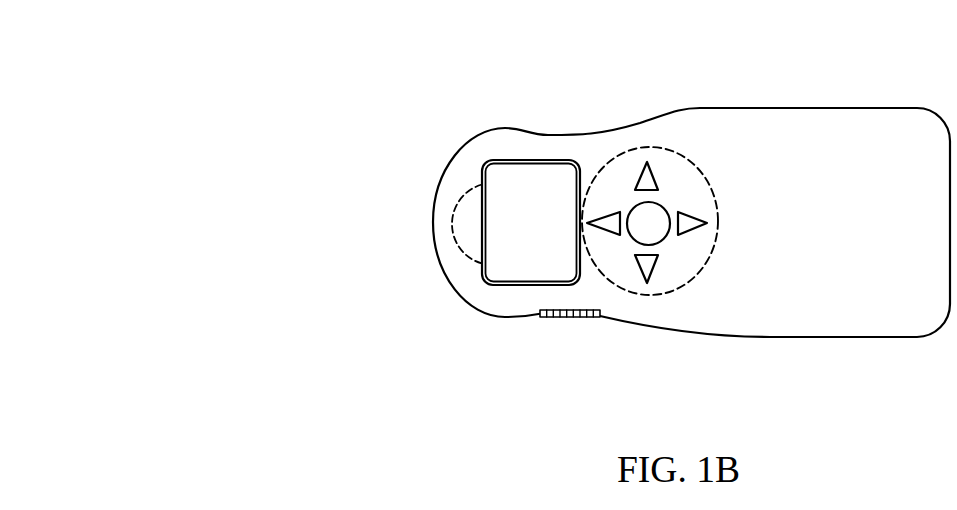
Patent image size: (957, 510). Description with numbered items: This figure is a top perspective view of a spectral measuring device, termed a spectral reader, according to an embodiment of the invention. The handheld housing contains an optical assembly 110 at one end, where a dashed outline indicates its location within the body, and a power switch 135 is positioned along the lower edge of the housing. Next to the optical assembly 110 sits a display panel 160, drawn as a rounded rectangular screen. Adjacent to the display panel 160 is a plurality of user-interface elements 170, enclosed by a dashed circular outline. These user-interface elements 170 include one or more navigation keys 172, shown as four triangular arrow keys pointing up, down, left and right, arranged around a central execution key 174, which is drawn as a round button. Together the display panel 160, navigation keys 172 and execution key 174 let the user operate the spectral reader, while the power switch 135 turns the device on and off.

The optical assembly 110 is at (470, 218).
The power switch 135 is at (563, 317).
The display panel 160 is at (530, 218).
The user-interface elements 170 is at (713, 192).
The navigation keys 172 is at (693, 217).
The execution key 174 is at (660, 233).